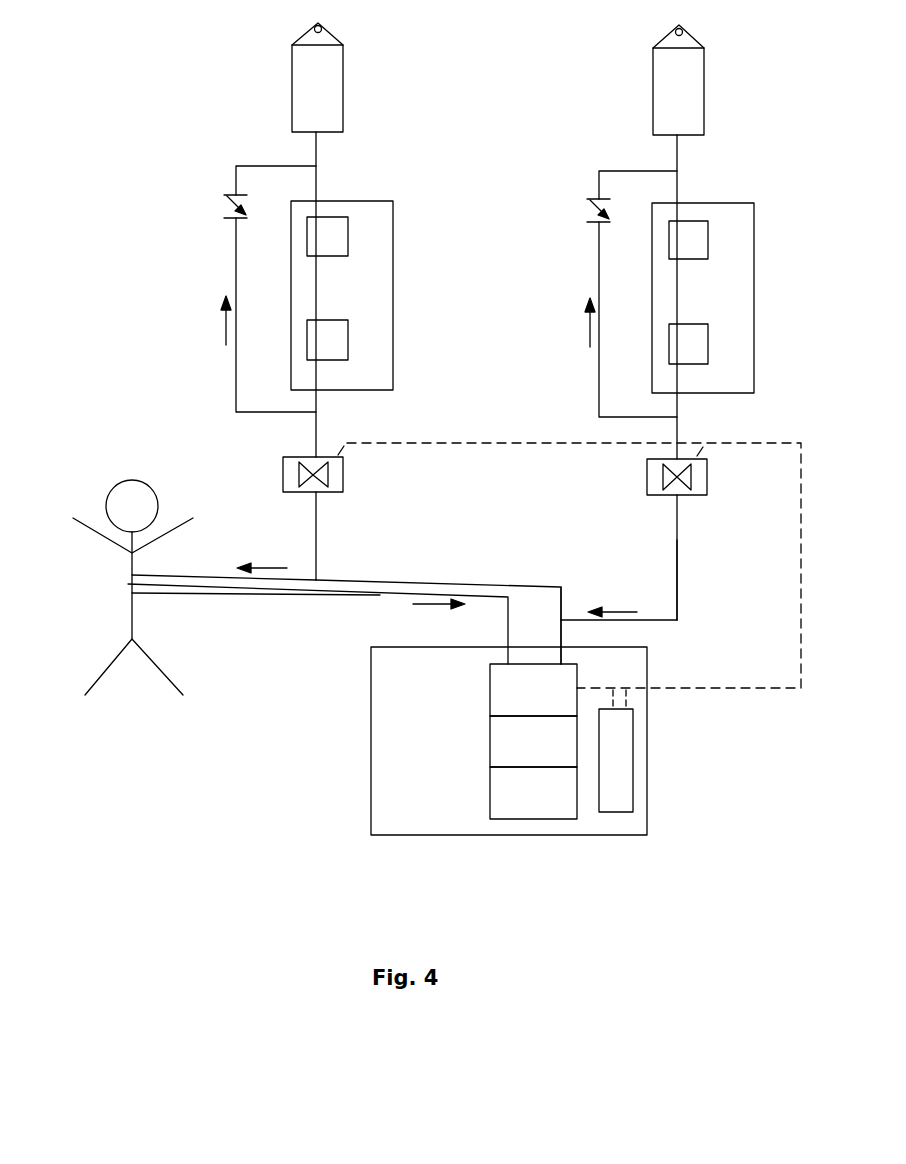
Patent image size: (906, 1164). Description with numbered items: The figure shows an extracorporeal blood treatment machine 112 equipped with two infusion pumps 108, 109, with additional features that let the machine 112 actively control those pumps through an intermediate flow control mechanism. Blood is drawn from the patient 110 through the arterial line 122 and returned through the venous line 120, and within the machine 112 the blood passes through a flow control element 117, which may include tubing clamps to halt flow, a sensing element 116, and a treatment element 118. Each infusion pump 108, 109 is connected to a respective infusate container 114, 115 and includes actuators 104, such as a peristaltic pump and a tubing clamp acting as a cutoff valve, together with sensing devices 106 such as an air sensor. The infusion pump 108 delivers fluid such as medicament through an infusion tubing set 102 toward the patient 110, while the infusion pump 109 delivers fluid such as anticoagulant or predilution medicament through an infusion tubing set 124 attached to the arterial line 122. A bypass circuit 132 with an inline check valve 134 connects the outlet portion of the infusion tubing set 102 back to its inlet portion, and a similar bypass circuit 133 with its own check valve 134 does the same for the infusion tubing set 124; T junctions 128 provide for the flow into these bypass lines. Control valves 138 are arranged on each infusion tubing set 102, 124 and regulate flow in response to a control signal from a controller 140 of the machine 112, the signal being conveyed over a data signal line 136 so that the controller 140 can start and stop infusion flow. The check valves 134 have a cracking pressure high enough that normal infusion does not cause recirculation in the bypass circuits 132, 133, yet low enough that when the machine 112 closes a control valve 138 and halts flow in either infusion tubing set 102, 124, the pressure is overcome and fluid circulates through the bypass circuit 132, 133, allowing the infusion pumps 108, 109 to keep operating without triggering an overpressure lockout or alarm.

The infusion tubing set 102 is at (316, 546).
The actuators 104 is at (348, 233).
The sensing devices 106 is at (348, 346).
The infusion pump 108 is at (360, 291).
The infusion pump 109 is at (721, 292).
The patient 110 is at (107, 492).
The extracorporeal blood treatment machine 112 is at (443, 813).
The infusate container 114 is at (336, 107).
The infusate container 115 is at (697, 110).
The sensing element 116 is at (552, 753).
The flow control element 117 is at (552, 700).
The treatment element 118 is at (552, 805).
The venous line 120 is at (561, 598).
The arterial line 122 is at (375, 596).
The infusion tubing set 124 is at (677, 585).
The T junctions 128 is at (334, 158).
The bypass circuit 132 is at (236, 178).
The bypass circuit 133 is at (599, 178).
The check valve 134 is at (232, 219).
The data signal line 136 is at (700, 689).
The control valves 138 is at (343, 467).
The controller 140 is at (633, 752).